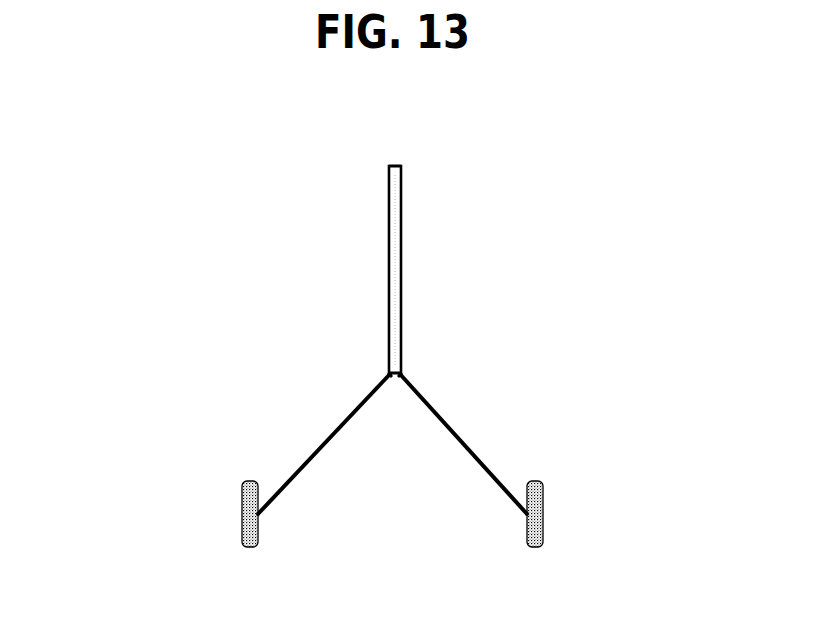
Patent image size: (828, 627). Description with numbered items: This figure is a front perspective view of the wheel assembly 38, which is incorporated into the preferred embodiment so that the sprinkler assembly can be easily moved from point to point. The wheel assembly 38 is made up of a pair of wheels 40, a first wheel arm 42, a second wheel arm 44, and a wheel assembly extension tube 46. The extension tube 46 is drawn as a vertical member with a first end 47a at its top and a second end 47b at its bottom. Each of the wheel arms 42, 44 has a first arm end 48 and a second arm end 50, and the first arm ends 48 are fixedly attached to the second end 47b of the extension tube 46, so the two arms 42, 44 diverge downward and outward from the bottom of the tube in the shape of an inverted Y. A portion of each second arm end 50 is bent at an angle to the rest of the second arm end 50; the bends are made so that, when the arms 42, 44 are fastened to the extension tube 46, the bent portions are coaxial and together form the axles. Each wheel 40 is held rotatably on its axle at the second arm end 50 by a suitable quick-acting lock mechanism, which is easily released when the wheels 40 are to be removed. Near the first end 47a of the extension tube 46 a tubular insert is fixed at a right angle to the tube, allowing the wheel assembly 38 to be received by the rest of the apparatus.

The wheel assembly 38 is at (470, 225).
The wheels 40 is at (248, 528).
The first wheel arm 42 is at (455, 425).
The second wheel arm 44 is at (288, 478).
The wheel assembly extension tube 46 is at (395, 284).
The first end of the extension tube 47a is at (398, 166).
The second end of the extension tube 47b is at (395, 376).
The first arm end 48 is at (388, 368).
The second arm end 50 is at (258, 514).